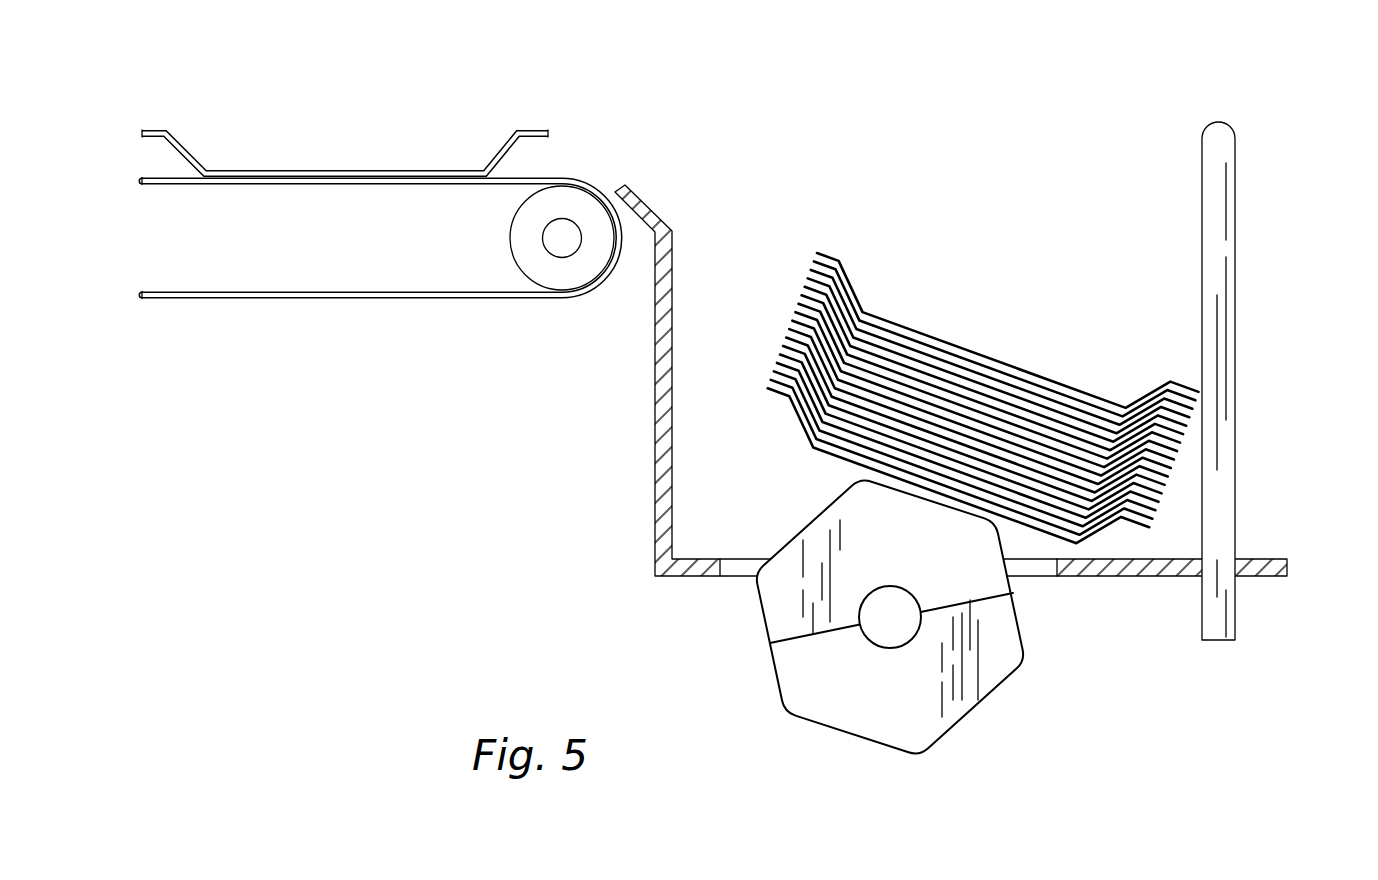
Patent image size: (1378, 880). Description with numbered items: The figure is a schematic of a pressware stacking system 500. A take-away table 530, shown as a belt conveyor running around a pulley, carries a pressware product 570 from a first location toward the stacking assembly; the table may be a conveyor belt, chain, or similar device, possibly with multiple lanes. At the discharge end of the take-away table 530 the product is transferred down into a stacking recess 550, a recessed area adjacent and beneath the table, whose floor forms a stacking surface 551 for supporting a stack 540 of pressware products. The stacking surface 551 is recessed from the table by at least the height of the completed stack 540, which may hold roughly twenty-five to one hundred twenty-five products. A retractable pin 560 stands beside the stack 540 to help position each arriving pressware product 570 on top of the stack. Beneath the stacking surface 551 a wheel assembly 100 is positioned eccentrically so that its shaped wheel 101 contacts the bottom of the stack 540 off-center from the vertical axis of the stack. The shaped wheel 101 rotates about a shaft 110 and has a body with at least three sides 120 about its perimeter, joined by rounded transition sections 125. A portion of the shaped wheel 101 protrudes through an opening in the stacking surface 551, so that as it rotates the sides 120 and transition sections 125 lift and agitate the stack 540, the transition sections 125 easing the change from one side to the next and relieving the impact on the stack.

The wheel assembly 100 is at (826, 736).
The shaped wheel 101 is at (828, 675).
The shaft 110 is at (887, 615).
The sides 120 is at (975, 713).
The transition section 125 is at (1030, 662).
The pressware stacking system 500 is at (1082, 130).
The take-away table 530 is at (312, 298).
The stack of pressware products 540 is at (940, 340).
The stacking recess 550 is at (653, 485).
The stacking surface 551 is at (1172, 562).
The retractable pin 560 is at (1228, 265).
The pressware product 570 is at (187, 142).